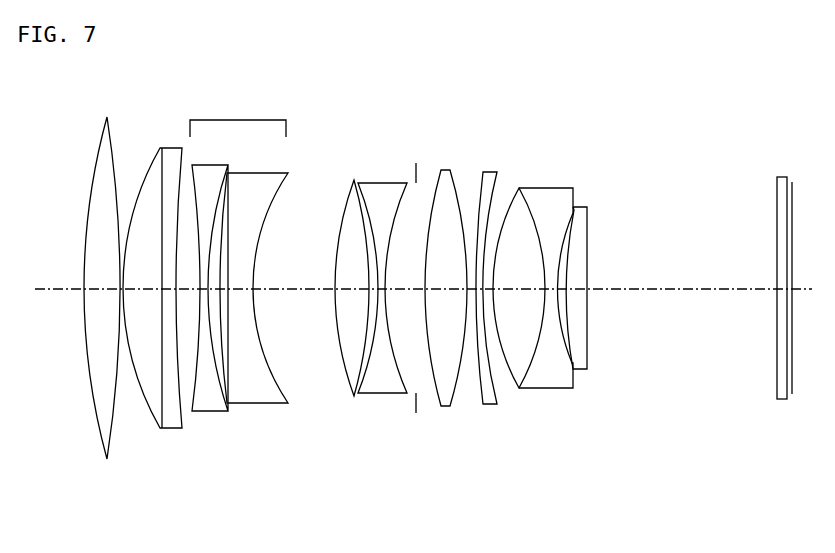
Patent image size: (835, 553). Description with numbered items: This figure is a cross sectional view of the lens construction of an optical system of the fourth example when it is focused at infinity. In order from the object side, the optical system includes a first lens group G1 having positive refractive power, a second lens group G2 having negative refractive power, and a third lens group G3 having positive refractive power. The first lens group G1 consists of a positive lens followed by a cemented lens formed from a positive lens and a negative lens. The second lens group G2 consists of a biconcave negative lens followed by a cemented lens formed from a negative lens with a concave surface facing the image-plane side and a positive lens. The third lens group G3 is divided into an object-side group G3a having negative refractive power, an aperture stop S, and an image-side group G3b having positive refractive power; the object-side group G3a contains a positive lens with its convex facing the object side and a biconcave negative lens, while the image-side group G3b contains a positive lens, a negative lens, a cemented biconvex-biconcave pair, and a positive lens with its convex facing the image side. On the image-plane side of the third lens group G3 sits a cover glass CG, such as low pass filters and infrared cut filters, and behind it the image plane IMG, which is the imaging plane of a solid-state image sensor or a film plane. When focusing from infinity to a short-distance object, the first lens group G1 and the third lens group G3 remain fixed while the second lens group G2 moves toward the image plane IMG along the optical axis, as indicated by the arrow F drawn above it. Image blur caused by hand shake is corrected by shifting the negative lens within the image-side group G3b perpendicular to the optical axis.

The first lens group G1 is at (78, 458).
The second lens group G2 is at (197, 458).
The third lens group G3 is at (466, 339).
The object-side group G3a is at (344, 420).
The image-side group G3b is at (508, 316).
The focusing group movement indicator F is at (235, 120).
The aperture stop S is at (416, 158).
The cover glass CG is at (778, 403).
The image plane IMG is at (792, 180).